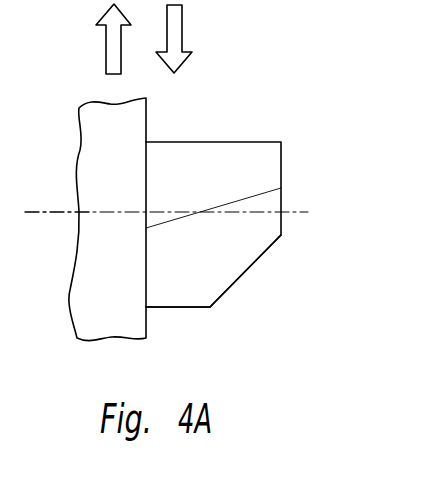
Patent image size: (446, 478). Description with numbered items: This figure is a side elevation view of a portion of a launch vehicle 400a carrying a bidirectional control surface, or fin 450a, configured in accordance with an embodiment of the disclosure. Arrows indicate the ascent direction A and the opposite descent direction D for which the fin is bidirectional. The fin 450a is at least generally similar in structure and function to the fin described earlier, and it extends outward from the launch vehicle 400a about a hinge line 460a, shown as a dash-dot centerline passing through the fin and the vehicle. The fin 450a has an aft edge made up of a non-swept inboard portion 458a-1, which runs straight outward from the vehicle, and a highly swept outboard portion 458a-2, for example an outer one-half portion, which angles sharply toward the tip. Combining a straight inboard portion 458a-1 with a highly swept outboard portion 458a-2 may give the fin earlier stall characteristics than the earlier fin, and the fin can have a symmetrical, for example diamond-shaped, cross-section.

The ascent direction A is at (106, 53).
The descent direction D is at (178, 22).
The launch vehicle 400a is at (146, 325).
The fin 450a is at (217, 142).
The non-swept inboard portion 458a-1 is at (200, 307).
The highly swept outboard portion 458a-2 is at (253, 263).
The hinge line 460a is at (68, 212).